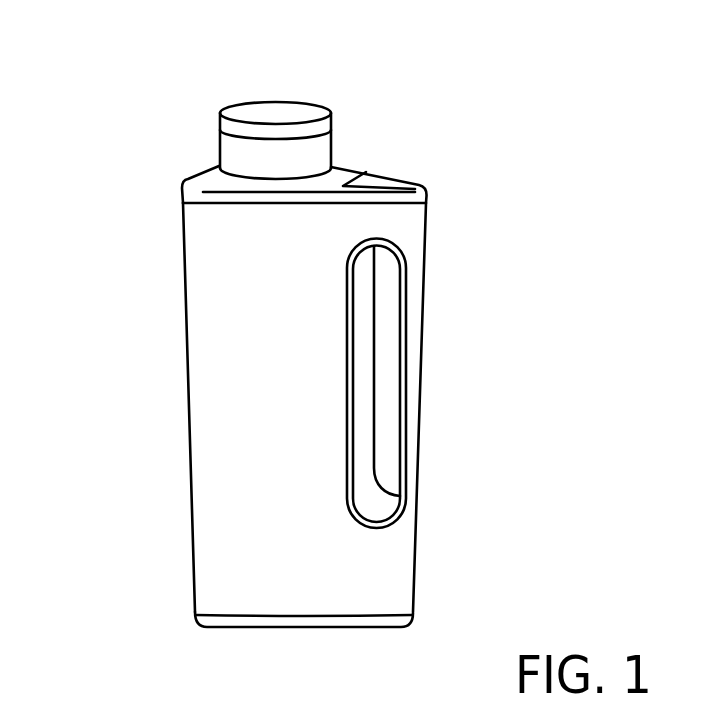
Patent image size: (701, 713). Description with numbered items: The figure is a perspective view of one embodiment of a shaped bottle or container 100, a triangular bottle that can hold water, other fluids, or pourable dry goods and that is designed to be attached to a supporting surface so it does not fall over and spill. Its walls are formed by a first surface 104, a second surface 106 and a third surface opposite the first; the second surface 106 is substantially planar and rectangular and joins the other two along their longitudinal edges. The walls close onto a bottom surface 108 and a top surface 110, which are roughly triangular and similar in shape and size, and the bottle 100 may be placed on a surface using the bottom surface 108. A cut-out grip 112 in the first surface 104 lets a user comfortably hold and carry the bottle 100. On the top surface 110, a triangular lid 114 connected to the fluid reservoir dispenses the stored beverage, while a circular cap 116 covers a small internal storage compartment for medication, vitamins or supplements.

The bottle or container 100 is at (158, 176).
The first surface 104 is at (228, 503).
The second surface 106 is at (185, 363).
The bottom surface 108 is at (295, 625).
The top surface 110 is at (342, 173).
The cut-out grip 112 is at (387, 448).
The triangular lid 114 is at (398, 183).
The circular cap 116 is at (233, 143).